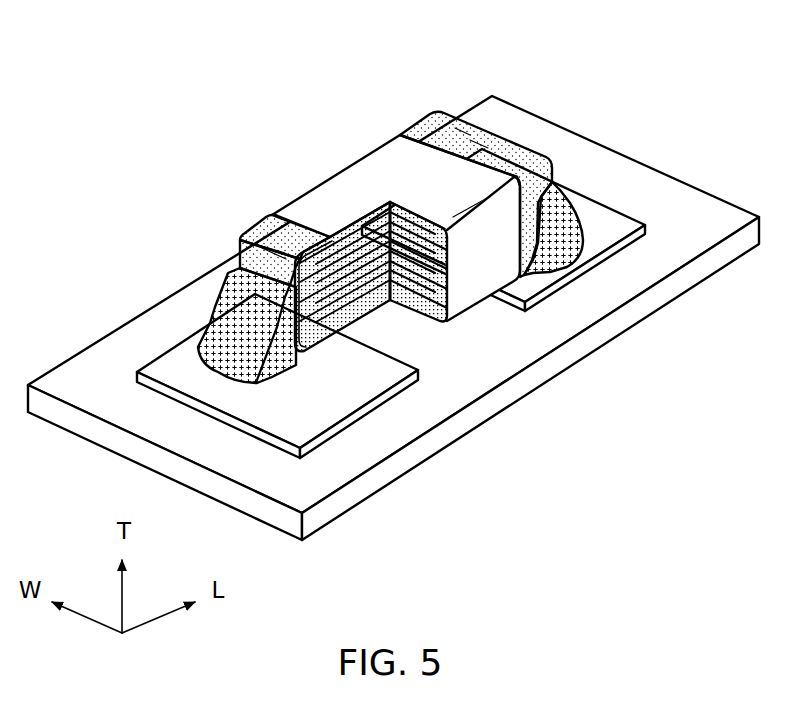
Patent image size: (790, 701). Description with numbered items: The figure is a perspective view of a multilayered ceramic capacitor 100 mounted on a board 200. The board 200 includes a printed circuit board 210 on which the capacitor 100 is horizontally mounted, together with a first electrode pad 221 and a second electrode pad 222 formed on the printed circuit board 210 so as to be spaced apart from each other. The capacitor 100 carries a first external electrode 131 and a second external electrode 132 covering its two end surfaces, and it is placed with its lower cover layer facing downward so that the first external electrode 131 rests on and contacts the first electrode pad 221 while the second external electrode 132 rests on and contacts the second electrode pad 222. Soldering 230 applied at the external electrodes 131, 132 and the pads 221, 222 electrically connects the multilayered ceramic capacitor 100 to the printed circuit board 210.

The multilayered ceramic capacitor 100 is at (364, 204).
The first external electrode 131 is at (262, 225).
The second external electrode 132 is at (423, 127).
The board for mounting a multilayered ceramic capacitor 200 is at (393, 315).
The printed circuit board 210 is at (526, 386).
The first electrode pad 221 is at (347, 397).
The second electrode pad 222 is at (597, 221).
The soldering 230 is at (228, 307).